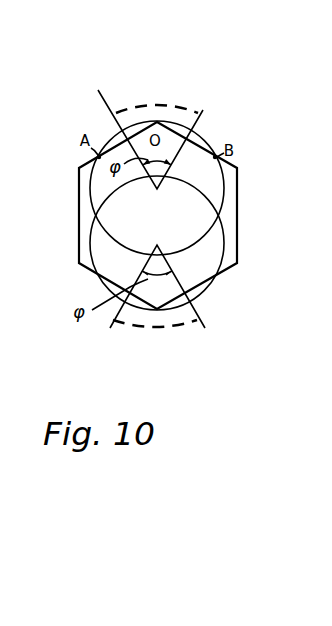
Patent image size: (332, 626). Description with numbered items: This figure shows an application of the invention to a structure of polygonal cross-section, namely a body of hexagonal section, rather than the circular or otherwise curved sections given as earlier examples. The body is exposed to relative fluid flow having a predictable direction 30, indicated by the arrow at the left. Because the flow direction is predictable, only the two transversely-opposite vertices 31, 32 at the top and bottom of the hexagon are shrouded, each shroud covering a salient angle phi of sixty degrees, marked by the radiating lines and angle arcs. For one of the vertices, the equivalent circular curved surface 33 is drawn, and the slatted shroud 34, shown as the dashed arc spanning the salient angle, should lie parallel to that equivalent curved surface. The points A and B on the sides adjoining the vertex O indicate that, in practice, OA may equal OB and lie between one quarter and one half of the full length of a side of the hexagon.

The predictable direction 30 is at (10, 217).
The transversely-opposite vertex 31 is at (160, 120).
The transversely-opposite vertex 32 is at (157, 309).
The equivalent circular curved surface 33 is at (212, 135).
The slatted shroud 34 is at (138, 107).